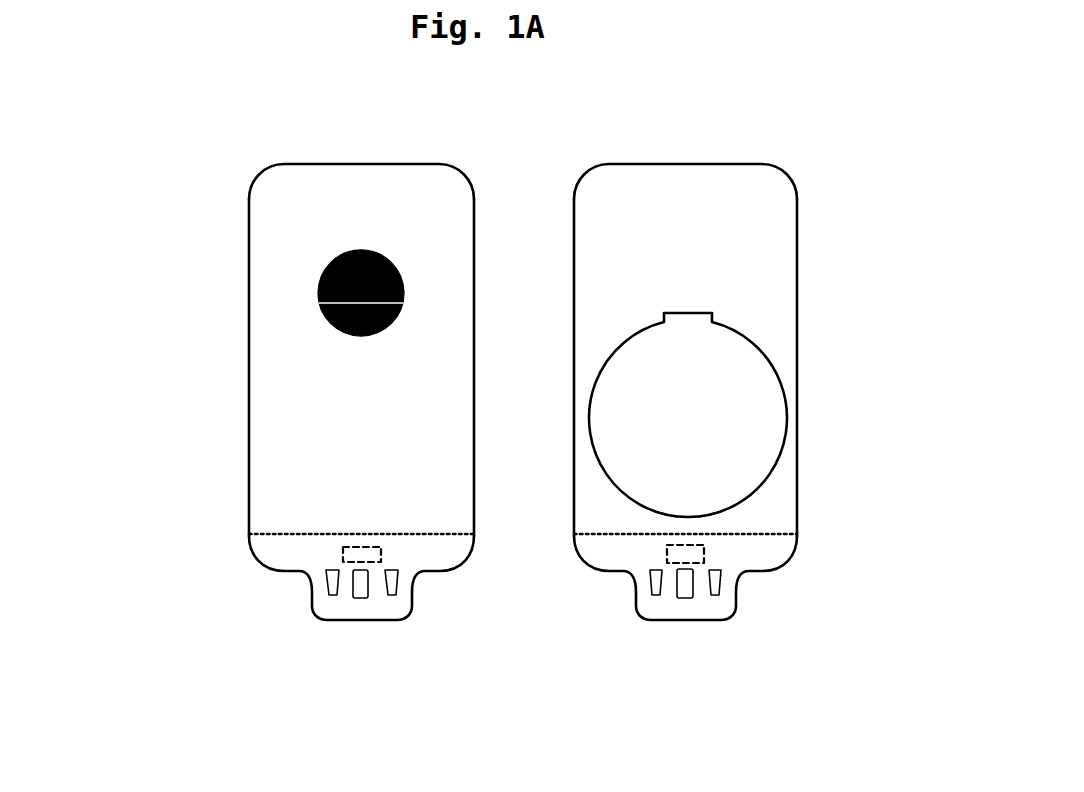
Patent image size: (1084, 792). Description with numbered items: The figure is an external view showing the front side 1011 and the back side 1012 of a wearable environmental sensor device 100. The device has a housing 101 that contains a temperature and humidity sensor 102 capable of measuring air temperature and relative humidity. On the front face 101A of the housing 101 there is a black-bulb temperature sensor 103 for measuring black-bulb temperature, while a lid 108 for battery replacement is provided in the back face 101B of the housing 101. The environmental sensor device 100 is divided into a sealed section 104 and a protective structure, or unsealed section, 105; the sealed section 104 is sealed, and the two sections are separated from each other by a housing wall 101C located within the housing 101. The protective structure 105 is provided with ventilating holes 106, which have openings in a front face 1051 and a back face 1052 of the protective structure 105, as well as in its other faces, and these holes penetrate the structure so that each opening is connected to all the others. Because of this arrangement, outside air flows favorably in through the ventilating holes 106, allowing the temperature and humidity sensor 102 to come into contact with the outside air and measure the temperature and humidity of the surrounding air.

The environmental sensor device 100 is at (498, 400).
The housing 101 is at (518, 312).
The front face 101A is at (303, 312).
The back face 101B is at (739, 313).
The housing wall 101C is at (587, 585).
The temperature and humidity sensor 102 is at (523, 509).
The black-bulb temperature sensor 103 is at (291, 275).
The sealed section 104 is at (491, 312).
The protective structure (unsealed section) 105 is at (488, 592).
The ventilating holes 106 is at (390, 594).
The lid 108 is at (750, 423).
The front side 1011 is at (361, 144).
The back side 1012 is at (685, 144).
The front face 1051 is at (338, 591).
The back face 1052 is at (709, 587).